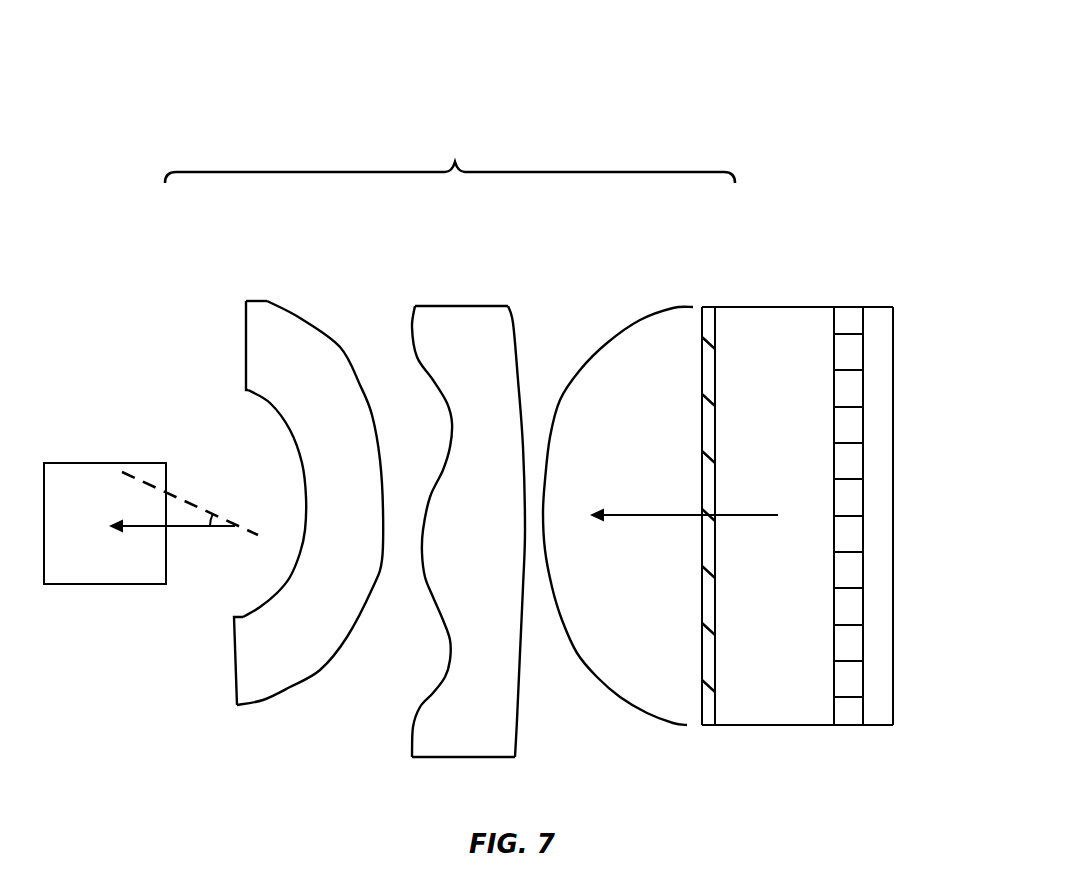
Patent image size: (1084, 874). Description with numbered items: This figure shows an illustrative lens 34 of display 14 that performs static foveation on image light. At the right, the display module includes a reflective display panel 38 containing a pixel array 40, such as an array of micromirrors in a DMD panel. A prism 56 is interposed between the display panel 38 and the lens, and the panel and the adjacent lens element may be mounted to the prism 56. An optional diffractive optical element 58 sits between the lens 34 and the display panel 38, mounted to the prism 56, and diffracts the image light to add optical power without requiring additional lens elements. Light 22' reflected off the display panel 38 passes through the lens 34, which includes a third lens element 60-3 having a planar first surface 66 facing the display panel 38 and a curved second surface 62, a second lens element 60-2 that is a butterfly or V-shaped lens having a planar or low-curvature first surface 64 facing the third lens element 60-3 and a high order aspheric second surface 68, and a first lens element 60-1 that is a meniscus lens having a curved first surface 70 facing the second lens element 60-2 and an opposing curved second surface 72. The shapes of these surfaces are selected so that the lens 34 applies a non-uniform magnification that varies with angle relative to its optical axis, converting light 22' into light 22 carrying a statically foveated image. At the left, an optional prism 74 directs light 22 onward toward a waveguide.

The display 14 is at (674, 73).
The lens 34 is at (450, 158).
The prism 74 is at (106, 573).
The light 22 is at (183, 533).
The first lens element 60-1 is at (308, 499).
The first surface 70 is at (327, 662).
The second surface 72 is at (261, 607).
The second lens element 60-2 is at (468, 528).
The second surface 68 is at (437, 708).
The first surface 64 is at (514, 722).
The third lens element 60-3 is at (622, 504).
The second surface 62 is at (611, 700).
The first surface 66 is at (697, 707).
The diffractive optical element 58 is at (712, 718).
The prism 56 is at (762, 318).
The light 22' is at (684, 548).
The pixel array 40 is at (846, 380).
The display panel 38 is at (880, 332).